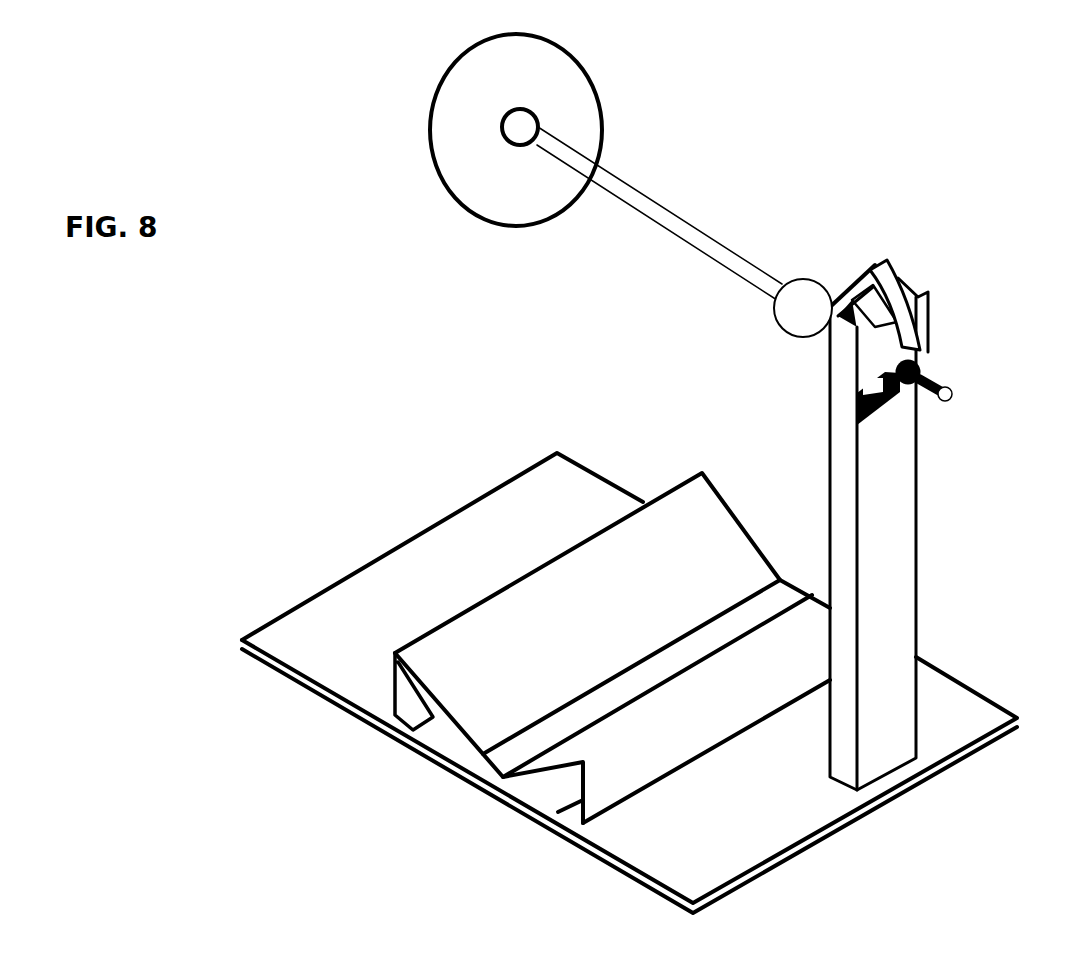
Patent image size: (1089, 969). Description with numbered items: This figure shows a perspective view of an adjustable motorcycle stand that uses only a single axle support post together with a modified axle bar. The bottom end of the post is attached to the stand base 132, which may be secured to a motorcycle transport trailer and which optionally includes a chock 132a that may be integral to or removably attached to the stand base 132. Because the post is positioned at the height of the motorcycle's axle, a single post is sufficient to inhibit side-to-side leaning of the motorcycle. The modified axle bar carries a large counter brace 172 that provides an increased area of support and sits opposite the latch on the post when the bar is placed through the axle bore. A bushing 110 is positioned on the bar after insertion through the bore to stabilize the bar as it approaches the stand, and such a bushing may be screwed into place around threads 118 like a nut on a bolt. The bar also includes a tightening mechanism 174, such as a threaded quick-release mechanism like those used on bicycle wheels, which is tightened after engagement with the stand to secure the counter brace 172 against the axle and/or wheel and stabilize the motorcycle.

The stand base 132 is at (417, 532).
The chock 132a is at (453, 687).
The tightening mechanism 174 is at (886, 273).
The threads 118 is at (938, 382).
The counter brace 172 is at (590, 72).
The bushing 110 is at (805, 287).